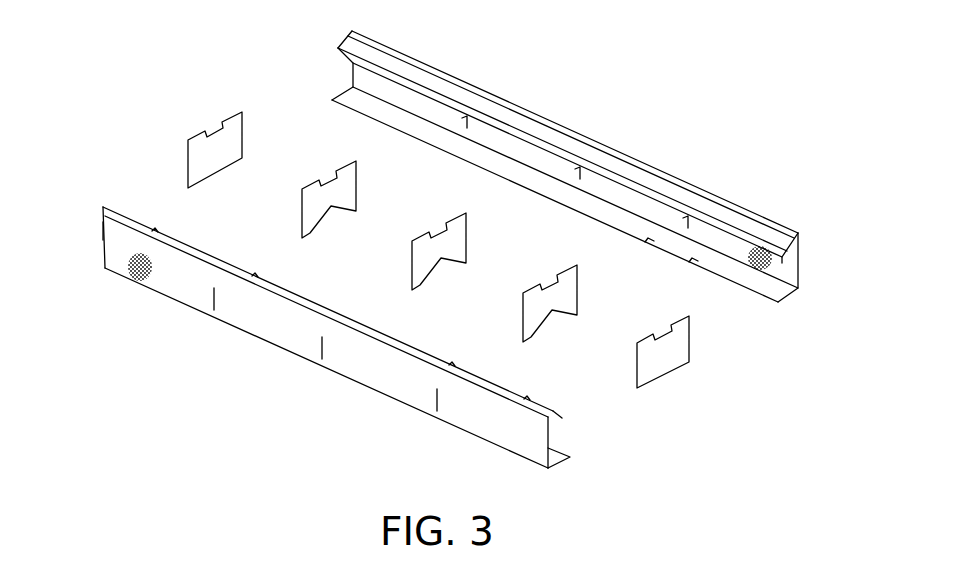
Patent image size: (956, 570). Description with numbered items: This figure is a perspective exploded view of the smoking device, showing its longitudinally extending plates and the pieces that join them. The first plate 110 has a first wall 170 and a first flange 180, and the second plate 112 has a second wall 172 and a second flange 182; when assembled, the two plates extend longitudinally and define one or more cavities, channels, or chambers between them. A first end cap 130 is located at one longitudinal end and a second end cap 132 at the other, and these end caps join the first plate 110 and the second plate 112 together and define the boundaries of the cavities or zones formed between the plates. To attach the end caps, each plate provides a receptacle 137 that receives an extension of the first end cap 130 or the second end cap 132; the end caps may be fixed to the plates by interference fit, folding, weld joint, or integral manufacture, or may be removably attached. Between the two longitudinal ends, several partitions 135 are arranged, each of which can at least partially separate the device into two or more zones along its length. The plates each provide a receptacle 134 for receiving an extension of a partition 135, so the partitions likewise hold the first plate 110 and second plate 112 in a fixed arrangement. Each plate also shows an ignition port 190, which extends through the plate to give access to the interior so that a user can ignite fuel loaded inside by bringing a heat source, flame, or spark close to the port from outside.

The first plate 110 is at (350, 378).
The second plate 112 is at (633, 156).
The first end cap 130 is at (243, 131).
The second end cap 132 is at (690, 350).
The receptacle 134 is at (468, 116).
The partition 135 is at (356, 183).
The receptacle 137 is at (352, 66).
The first wall 170 is at (483, 427).
The second wall 172 is at (712, 237).
The first flange 180 is at (203, 251).
The second flange 182 is at (486, 114).
The ignition port 190 is at (134, 282).